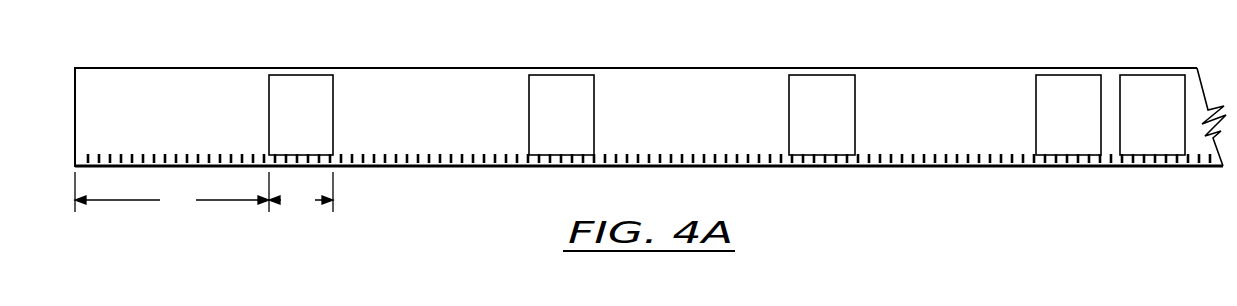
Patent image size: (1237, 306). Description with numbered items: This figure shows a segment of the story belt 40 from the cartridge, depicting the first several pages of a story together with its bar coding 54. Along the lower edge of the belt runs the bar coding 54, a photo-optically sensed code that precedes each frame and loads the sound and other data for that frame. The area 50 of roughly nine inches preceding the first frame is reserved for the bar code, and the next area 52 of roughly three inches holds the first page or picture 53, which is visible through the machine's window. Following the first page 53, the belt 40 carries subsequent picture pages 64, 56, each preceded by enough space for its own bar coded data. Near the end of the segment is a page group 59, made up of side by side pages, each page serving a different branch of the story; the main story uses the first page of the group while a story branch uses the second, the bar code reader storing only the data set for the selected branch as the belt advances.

The belt 40 is at (98, 60).
The bar code area 50 is at (172, 194).
The picture area 52 is at (301, 194).
The first page 53 is at (330, 88).
The bar coding 54 is at (357, 165).
The subsequent picture page 56 is at (592, 88).
The page group 59 is at (1150, 73).
The subsequent picture page 64 is at (855, 84).